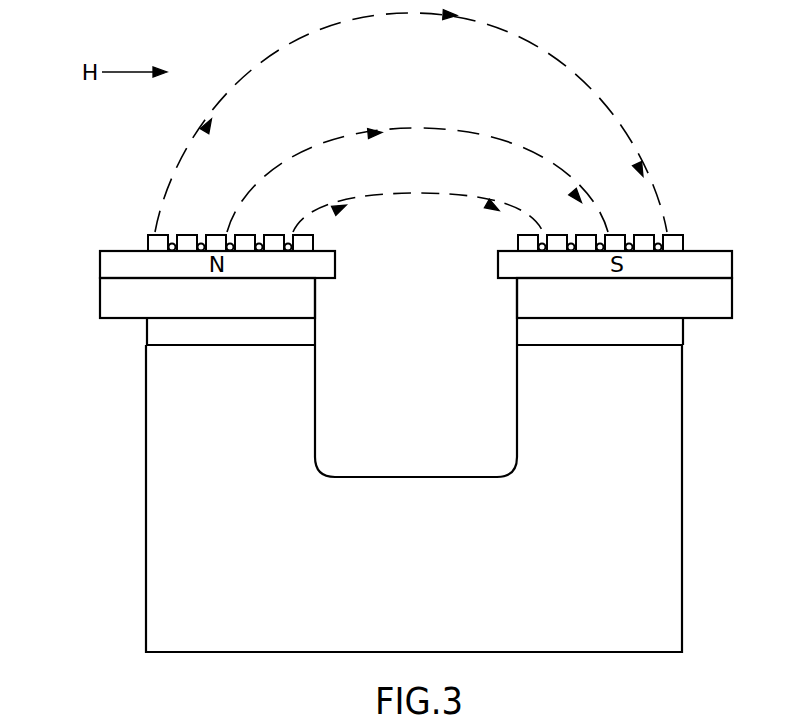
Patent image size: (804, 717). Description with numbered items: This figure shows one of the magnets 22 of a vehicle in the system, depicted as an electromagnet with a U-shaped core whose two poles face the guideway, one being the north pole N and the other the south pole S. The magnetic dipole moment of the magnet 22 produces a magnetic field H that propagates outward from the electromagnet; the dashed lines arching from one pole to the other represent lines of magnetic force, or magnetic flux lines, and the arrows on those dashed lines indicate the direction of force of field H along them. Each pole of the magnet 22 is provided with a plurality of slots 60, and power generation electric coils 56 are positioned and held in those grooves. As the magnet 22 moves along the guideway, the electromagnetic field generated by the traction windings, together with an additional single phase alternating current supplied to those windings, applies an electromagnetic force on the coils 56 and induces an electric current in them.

The magnet 22 is at (120, 424).
The power generation electric coils 56 is at (203, 252).
The slots 60 is at (229, 243).